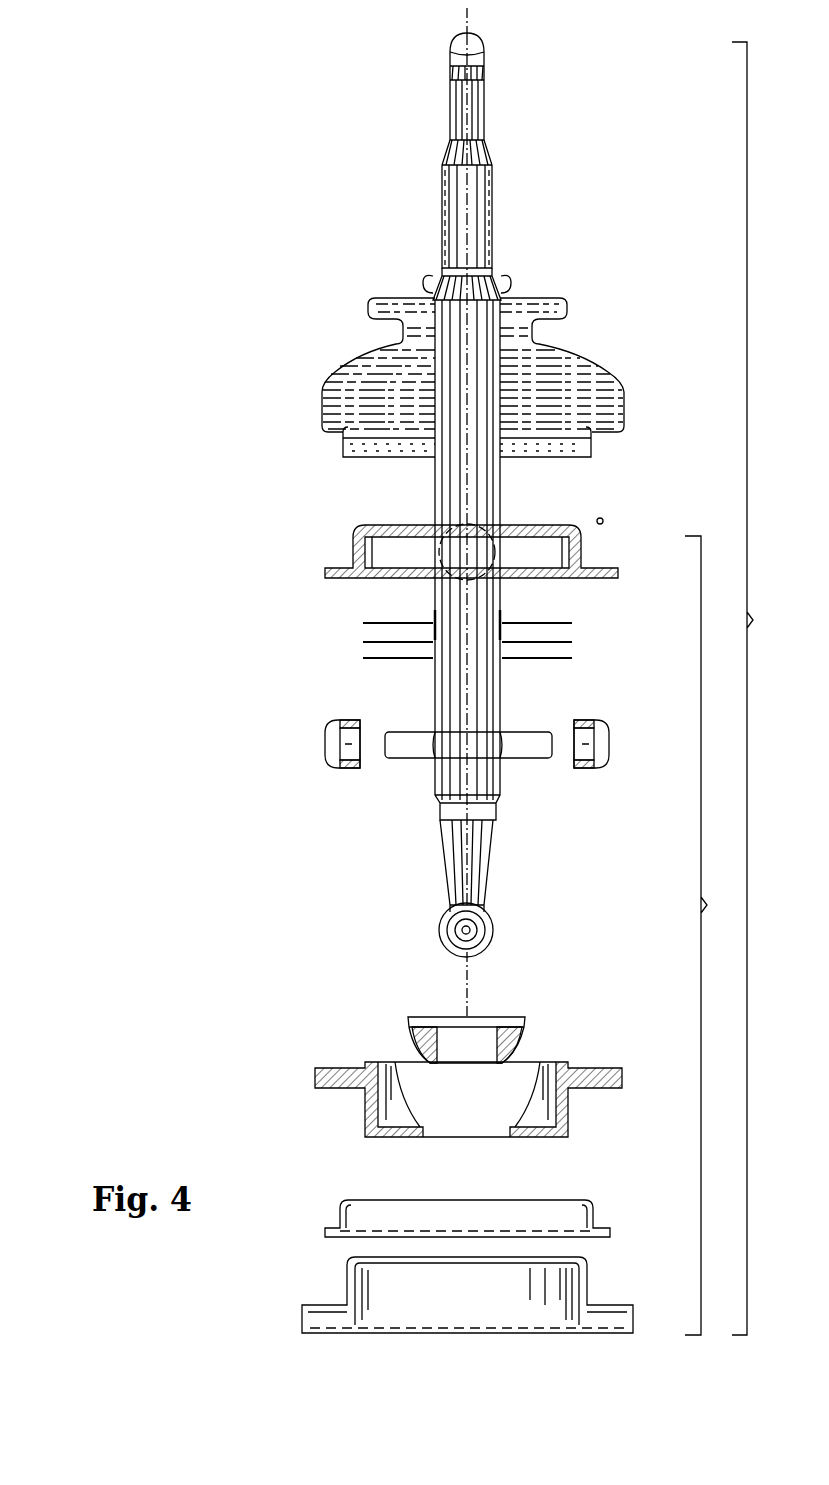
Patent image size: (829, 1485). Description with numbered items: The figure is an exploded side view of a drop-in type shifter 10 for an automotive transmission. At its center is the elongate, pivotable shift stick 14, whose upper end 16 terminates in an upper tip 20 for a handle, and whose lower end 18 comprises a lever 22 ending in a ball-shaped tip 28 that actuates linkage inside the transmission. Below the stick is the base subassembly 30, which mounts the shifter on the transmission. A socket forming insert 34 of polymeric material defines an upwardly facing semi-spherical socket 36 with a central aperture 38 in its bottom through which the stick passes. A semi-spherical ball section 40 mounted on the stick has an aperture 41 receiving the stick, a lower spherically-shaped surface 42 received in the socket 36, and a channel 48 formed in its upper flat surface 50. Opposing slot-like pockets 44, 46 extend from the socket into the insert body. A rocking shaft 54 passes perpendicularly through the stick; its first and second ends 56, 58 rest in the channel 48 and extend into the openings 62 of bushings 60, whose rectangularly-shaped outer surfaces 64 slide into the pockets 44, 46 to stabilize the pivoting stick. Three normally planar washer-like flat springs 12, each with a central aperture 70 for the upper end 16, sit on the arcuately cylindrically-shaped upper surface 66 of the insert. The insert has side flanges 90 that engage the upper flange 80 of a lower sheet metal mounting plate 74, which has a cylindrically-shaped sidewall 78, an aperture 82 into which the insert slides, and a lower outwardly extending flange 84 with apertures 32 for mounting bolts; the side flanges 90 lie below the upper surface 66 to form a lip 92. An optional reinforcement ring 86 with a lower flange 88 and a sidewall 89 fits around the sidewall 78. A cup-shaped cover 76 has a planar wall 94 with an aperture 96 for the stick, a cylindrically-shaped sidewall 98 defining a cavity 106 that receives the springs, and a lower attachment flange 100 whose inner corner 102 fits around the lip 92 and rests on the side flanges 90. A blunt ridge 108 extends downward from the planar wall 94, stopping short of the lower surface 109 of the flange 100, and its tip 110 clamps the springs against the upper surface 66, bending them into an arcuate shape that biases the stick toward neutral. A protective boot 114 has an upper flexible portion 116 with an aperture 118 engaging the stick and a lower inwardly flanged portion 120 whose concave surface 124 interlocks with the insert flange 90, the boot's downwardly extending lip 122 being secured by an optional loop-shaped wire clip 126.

The drop-in type shifter 10 is at (760, 688).
The flat springs 12 is at (575, 658).
The shift stick 14 is at (466, 480).
The upper end 16 is at (445, 190).
The lower end 18 is at (469, 469).
The upper tip 20 is at (478, 36).
The lever 22 is at (497, 860).
The ball-shaped tip 28 is at (496, 930).
The base subassembly 30 is at (713, 935).
The apertures 32 is at (335, 1336).
The socket forming insert 34 is at (466, 1094).
The socket 36 is at (400, 1137).
The aperture 38 is at (468, 1140).
The ball section 40 is at (456, 1007).
The aperture 41 is at (477, 1056).
The lower spherically-shaped surface 42 is at (520, 1052).
The slot-like pocket 44 is at (365, 1106).
The slot-like pocket 46 is at (575, 1128).
The channel 48 is at (433, 1028).
The upper flat surface 50 is at (482, 1020).
The rocking shaft 54 is at (458, 742).
The first end 56 is at (388, 758).
The second end 58 is at (546, 758).
The bushings 60 is at (454, 739).
The openings 62 is at (358, 738).
The rectangularly-shaped outer surfaces 64 is at (342, 766).
The upper surface 66 is at (395, 1066).
The aperture 70 is at (505, 622).
The lower mounting plate 74 is at (428, 1320).
The cover 76 is at (456, 549).
The sidewall 78 is at (352, 1292).
The upper flange 80 is at (368, 1282).
The aperture 82 is at (440, 1268).
The lower flange 84 is at (305, 1336).
The reinforcement ring 86 is at (429, 1218).
The lower flange 88 is at (330, 1232).
The sidewall 89 is at (400, 1210).
The side flanges 90 is at (625, 1077).
The lip 92 is at (578, 1063).
The planar wall 94 is at (410, 523).
The aperture 96 is at (515, 523).
The sidewall 98 is at (582, 548).
The lower attachment flange 100 is at (620, 576).
The inner corner 102 is at (358, 580).
The cavity 106 is at (396, 548).
The ridge 108 is at (535, 548).
The lower surface 109 is at (374, 580).
The tip 110 is at (469, 628).
The protective boot 114 is at (326, 385).
The upper flexible portion 116 is at (460, 388).
The aperture 118 is at (497, 243).
The lower inwardly flanged portion 120 is at (514, 437).
The lip 122 is at (592, 457).
The concave surface 124 is at (620, 412).
The wire clip 126 is at (643, 520).